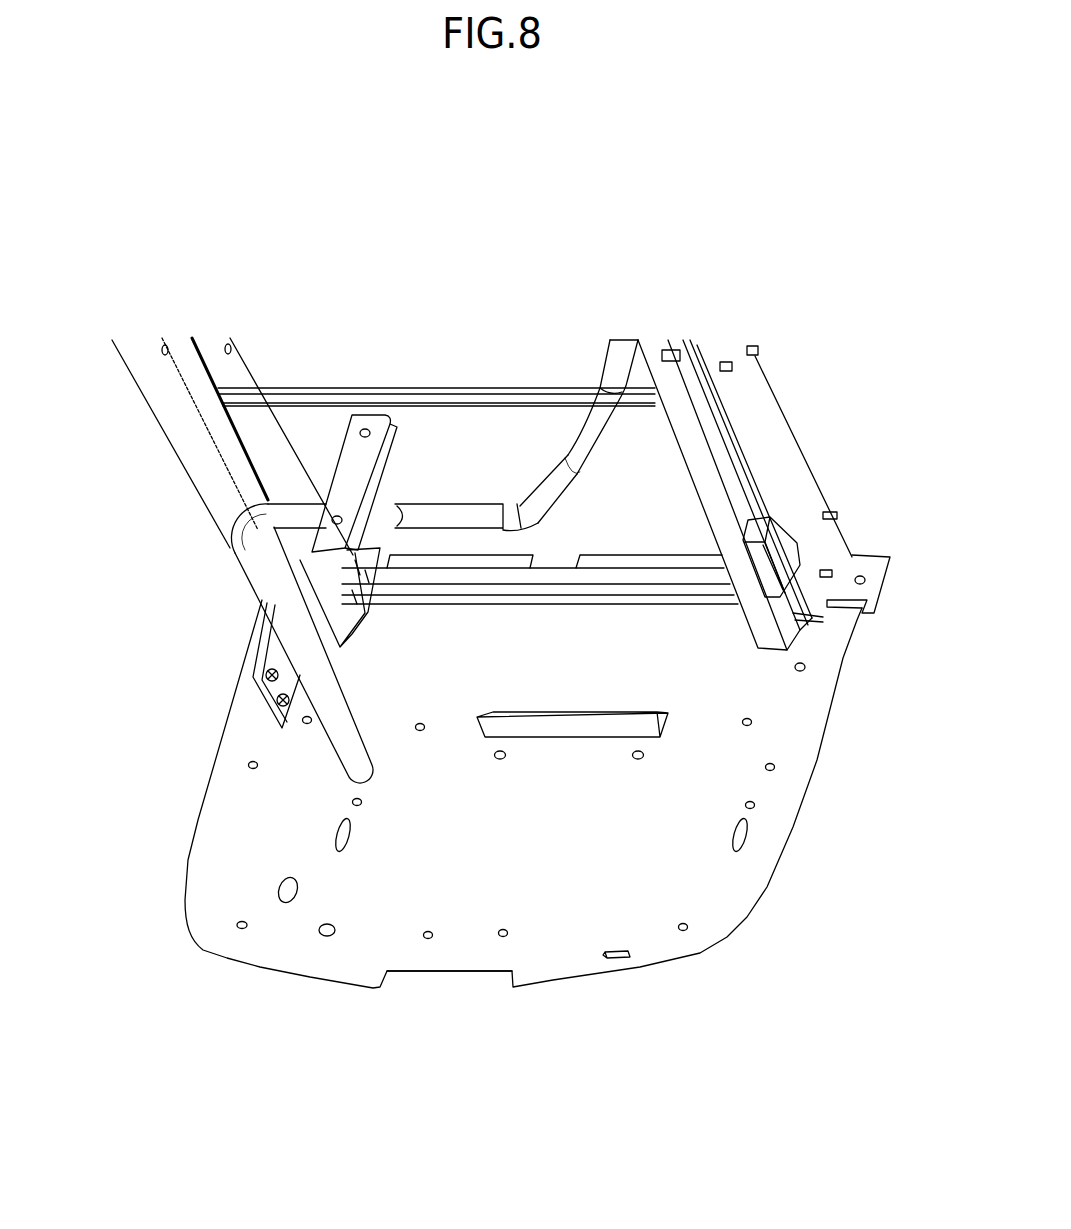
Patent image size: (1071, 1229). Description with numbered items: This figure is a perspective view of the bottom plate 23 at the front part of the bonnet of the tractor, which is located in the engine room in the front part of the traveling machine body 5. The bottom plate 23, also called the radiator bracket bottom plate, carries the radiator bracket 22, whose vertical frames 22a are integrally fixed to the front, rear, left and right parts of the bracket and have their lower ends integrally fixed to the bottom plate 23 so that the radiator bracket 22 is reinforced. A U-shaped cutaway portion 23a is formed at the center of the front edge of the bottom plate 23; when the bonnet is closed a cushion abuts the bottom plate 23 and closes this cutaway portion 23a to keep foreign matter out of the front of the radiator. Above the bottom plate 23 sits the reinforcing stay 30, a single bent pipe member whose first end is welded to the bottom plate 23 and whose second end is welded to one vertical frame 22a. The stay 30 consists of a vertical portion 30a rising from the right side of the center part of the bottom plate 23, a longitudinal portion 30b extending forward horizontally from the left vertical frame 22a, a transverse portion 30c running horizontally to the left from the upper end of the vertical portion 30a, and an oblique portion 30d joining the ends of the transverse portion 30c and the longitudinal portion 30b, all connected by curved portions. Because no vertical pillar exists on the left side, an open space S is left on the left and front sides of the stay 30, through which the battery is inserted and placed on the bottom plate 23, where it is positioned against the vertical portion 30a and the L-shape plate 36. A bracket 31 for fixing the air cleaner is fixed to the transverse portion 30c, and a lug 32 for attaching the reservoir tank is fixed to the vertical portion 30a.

The traveling machine body 5 is at (818, 899).
The radiator bracket 22 is at (760, 402).
The vertical frames 22a is at (185, 378).
The bottom plate 23 is at (800, 728).
The cutaway portion 23a is at (500, 988).
The reinforcing stay 30 is at (238, 586).
The vertical portion 30a is at (330, 690).
The longitudinal portion 30b is at (617, 368).
The transverse portion 30c is at (442, 510).
The oblique portion 30d is at (558, 470).
The bracket 31 is at (345, 455).
The lug 32 is at (265, 700).
The L-shape plate 36 is at (543, 727).
The open space S is at (583, 646).